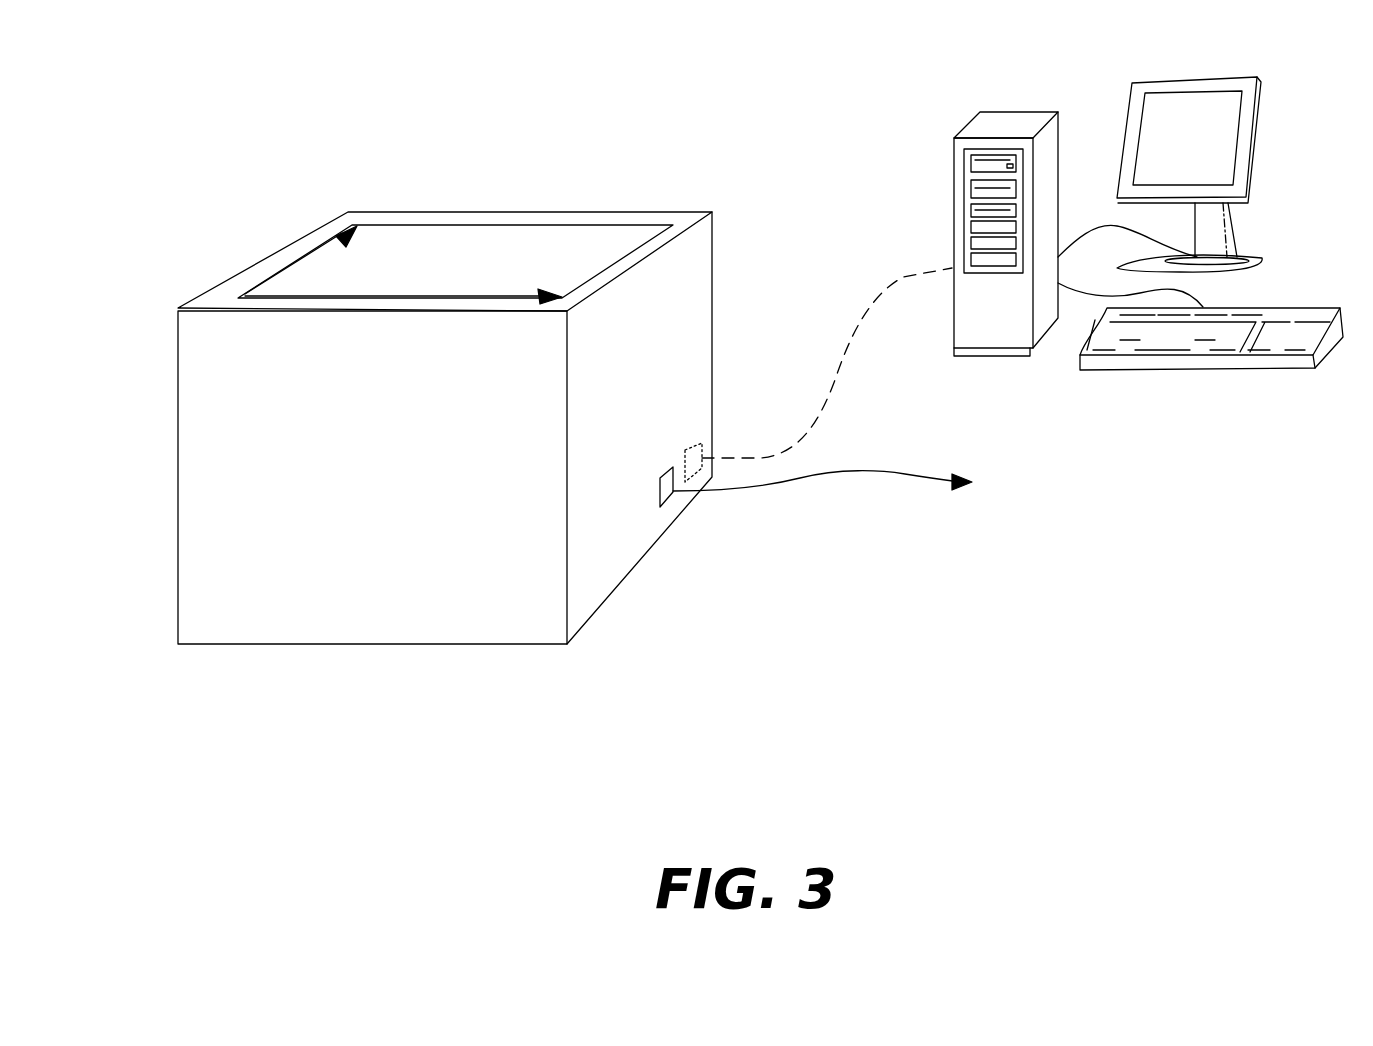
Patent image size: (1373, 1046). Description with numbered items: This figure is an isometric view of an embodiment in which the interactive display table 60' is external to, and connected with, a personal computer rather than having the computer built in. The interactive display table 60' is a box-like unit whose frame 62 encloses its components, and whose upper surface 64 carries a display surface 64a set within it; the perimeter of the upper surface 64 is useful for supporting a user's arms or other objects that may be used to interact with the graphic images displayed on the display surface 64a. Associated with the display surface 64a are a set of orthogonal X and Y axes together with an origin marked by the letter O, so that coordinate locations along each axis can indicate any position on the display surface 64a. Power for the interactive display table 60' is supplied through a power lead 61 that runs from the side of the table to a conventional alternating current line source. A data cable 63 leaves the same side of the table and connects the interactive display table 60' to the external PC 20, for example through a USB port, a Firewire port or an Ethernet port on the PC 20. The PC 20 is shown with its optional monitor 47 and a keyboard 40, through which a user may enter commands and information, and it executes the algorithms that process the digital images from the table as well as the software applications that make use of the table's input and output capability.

The interactive display table 60' is at (372, 366).
The frame 62 is at (178, 426).
The upper surface 64 is at (330, 237).
The display surface 64a is at (429, 275).
The power lead 61 is at (825, 477).
The data cable 63 is at (842, 355).
The PC 20 is at (1018, 112).
The monitor 47 is at (1262, 135).
The keyboard 40 is at (1300, 307).